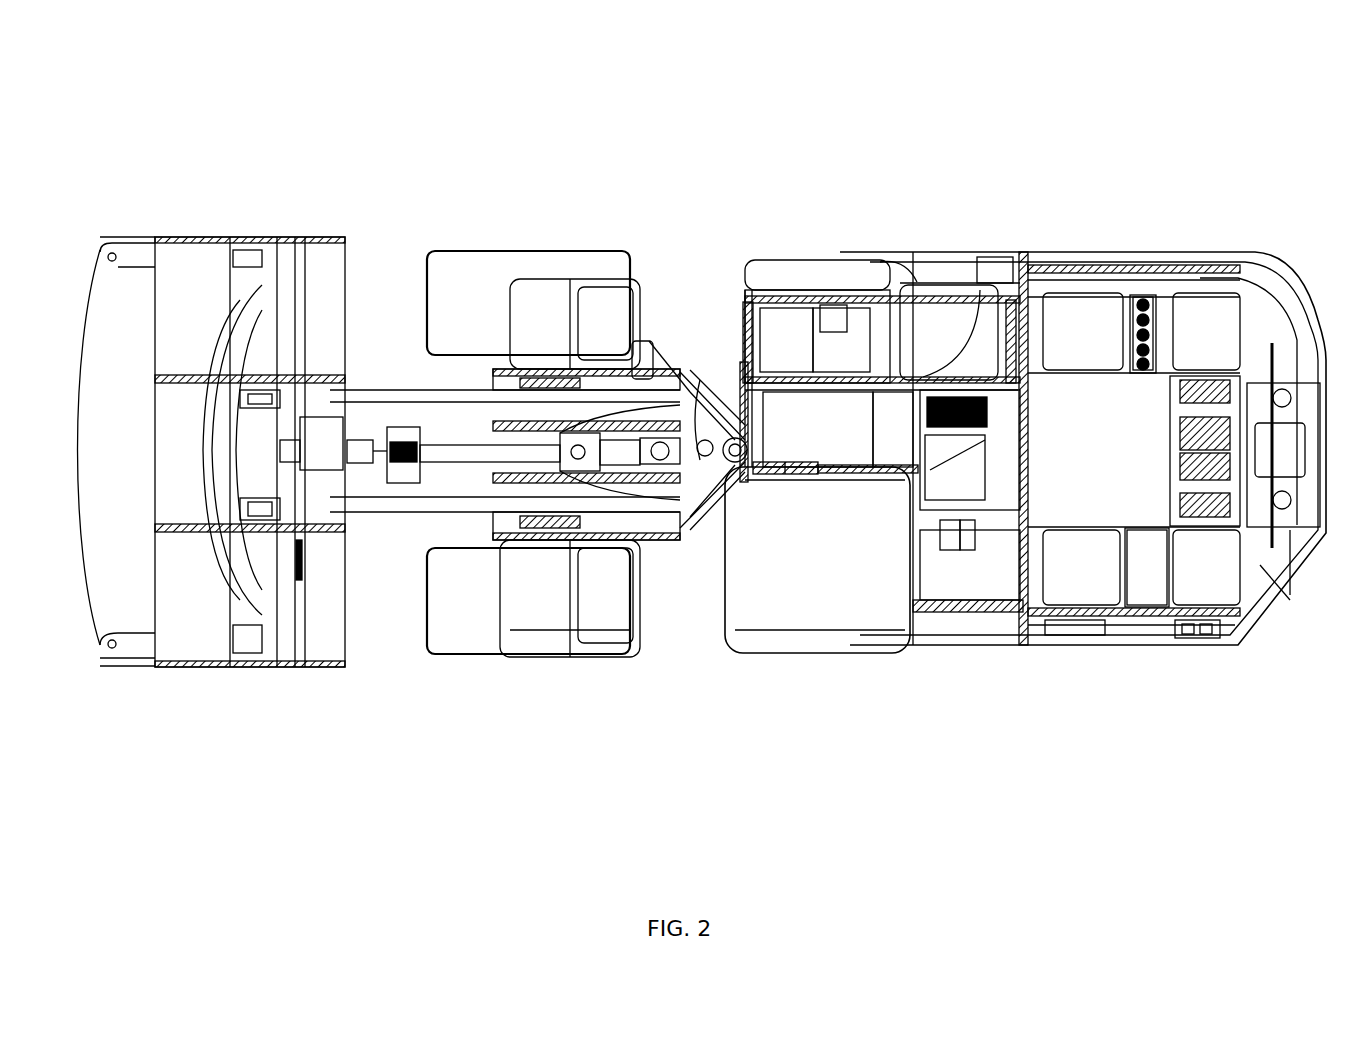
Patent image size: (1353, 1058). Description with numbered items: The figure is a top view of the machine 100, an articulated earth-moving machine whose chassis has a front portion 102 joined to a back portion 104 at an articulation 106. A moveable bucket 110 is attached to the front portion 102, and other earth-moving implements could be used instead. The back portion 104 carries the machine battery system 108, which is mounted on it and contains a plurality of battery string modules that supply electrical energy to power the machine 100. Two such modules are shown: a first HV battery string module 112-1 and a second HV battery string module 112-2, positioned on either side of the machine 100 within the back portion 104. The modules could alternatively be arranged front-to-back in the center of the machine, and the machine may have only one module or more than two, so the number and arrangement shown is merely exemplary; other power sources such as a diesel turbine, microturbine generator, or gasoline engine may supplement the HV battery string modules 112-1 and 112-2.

The machine 100 is at (702, 432).
The front portion 102 is at (532, 220).
The back portion 104 is at (825, 597).
The articulation 106 is at (710, 342).
The machine battery system 108 is at (1296, 612).
The moveable bucket 110 is at (248, 218).
The first HV battery string module 112-1 is at (1148, 582).
The second HV battery string module 112-2 is at (1160, 320).